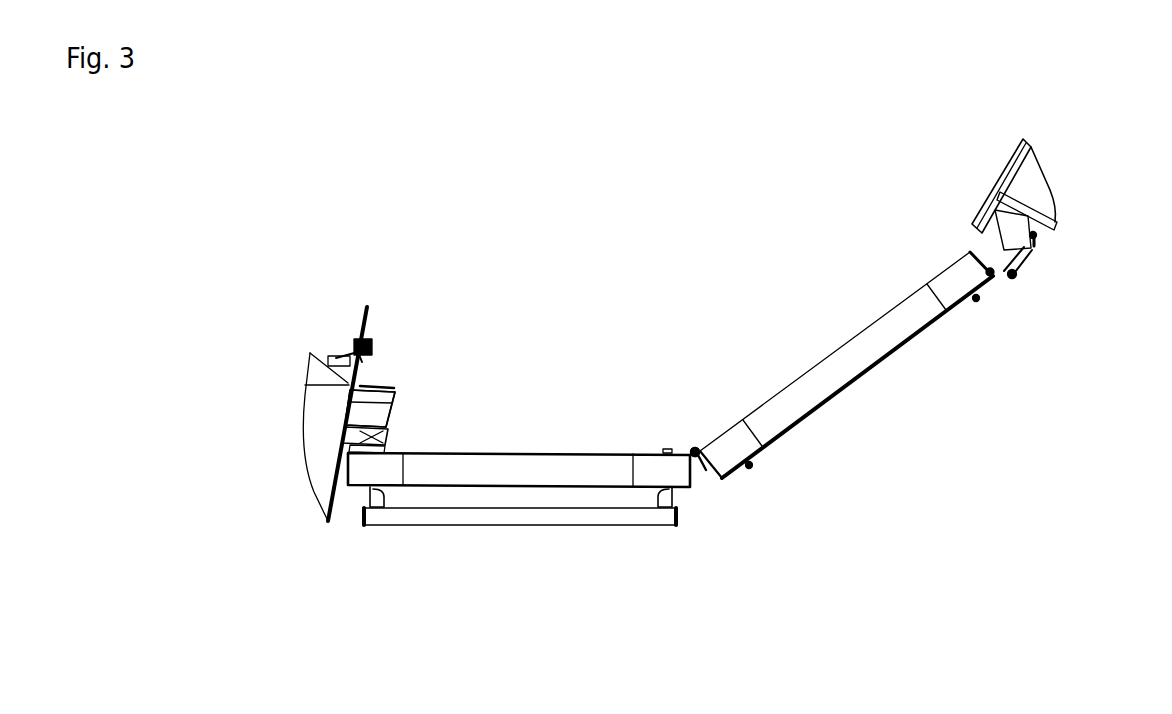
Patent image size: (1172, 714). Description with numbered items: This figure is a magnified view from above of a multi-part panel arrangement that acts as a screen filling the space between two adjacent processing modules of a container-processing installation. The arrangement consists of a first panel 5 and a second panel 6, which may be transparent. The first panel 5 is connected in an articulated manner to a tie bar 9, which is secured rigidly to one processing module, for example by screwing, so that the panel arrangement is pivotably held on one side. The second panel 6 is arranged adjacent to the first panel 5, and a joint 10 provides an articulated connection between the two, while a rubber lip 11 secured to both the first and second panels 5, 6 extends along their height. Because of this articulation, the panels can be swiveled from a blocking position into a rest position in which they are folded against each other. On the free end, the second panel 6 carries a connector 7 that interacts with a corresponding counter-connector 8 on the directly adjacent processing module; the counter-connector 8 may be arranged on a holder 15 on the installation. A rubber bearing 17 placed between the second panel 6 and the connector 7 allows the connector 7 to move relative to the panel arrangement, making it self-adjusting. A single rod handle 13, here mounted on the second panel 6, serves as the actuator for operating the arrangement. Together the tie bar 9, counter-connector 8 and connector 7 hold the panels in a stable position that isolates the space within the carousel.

The first panel 5 is at (853, 380).
The second panel 6 is at (495, 449).
The connector 7 is at (376, 432).
The counter-connector 8 is at (378, 388).
The tie bar 9 is at (1010, 228).
The joint 10 is at (687, 445).
The rubber lip 11 is at (685, 420).
The rod handle 13 is at (455, 525).
The holder 15 is at (378, 388).
The rubber bearing 17 is at (345, 445).